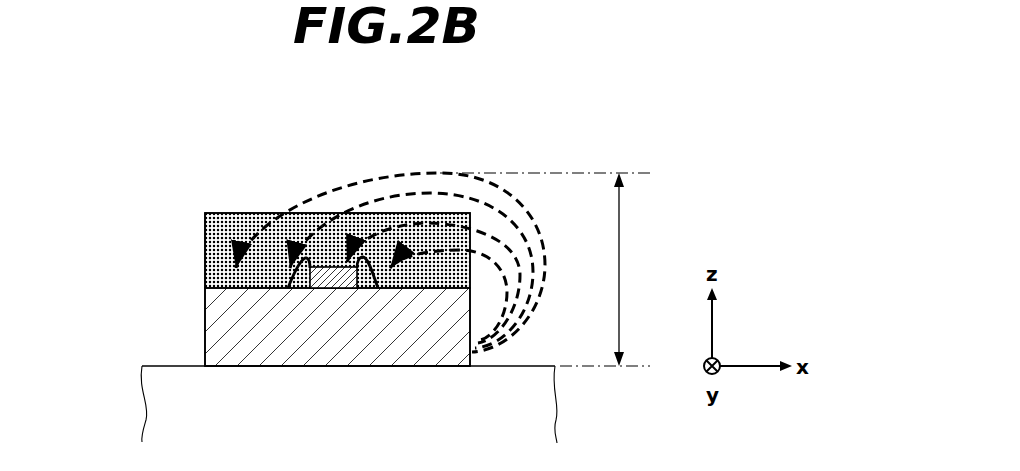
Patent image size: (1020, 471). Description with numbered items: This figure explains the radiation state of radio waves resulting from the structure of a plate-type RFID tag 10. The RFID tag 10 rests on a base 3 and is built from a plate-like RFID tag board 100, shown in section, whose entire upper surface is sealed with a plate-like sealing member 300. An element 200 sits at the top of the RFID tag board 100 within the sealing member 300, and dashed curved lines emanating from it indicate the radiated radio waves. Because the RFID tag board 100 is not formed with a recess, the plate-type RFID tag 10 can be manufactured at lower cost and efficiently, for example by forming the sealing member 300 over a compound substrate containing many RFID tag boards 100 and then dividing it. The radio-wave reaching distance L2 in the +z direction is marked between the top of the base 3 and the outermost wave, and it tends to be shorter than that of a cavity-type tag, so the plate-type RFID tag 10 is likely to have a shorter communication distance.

The substrate 3 is at (163, 393).
The plate-type RFID tag 10 is at (195, 158).
The RFID tag board 100 is at (220, 333).
The conductor / coil element 200 is at (330, 278).
The sealing member 300 is at (232, 228).
The radio-wave reaching distance L2 is at (546, 269).